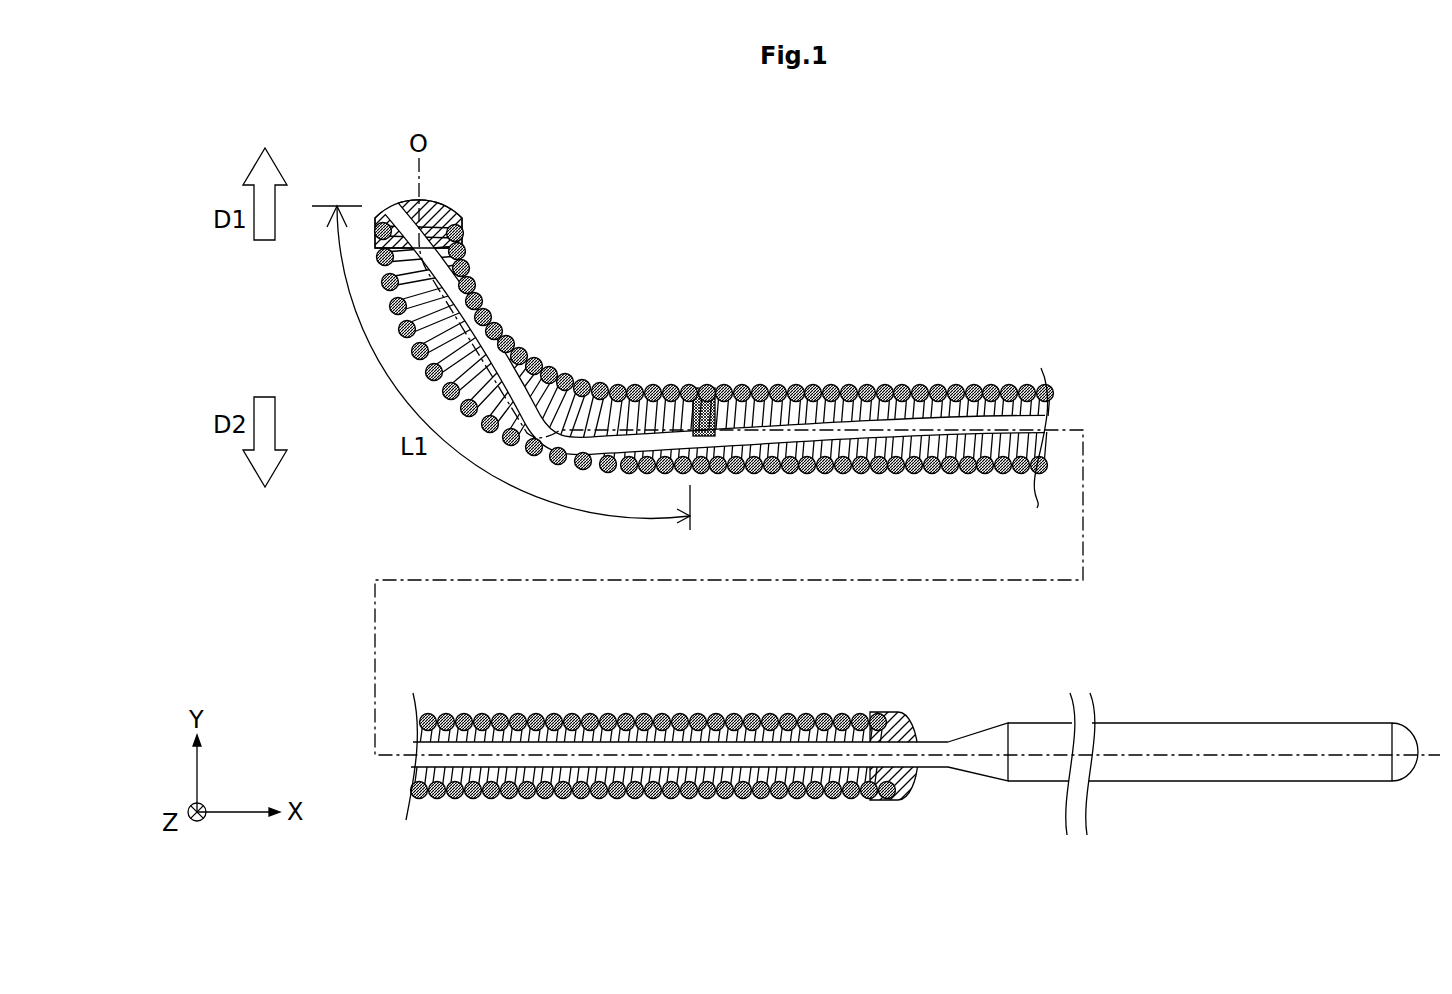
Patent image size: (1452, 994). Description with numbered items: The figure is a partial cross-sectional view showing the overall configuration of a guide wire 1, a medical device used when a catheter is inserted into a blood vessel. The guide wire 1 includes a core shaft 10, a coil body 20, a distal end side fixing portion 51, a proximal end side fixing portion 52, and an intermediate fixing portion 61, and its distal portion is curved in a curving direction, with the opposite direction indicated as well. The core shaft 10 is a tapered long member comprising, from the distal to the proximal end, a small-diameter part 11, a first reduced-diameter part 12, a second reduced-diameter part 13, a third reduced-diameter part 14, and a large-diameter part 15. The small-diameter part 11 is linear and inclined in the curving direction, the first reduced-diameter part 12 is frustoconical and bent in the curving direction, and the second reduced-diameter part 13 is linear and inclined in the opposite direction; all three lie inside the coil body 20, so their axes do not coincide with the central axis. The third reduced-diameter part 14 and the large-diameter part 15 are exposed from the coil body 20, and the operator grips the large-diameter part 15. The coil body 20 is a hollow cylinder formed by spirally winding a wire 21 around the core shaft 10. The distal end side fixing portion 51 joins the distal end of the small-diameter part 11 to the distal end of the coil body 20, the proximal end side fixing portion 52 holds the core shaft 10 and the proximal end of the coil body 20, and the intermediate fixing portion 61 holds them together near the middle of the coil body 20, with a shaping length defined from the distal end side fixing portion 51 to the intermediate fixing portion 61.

The guide wire 1 is at (144, 188).
The core shaft 10 is at (938, 408).
The small-diameter part 11 is at (528, 360).
The first reduced-diameter part 12 is at (605, 440).
The second reduced-diameter part 13 is at (1013, 420).
The third reduced-diameter part 14 is at (989, 732).
The large-diameter part 15 is at (1116, 734).
The coil body 20 is at (758, 378).
The wire 21 is at (868, 386).
The distal end side fixing portion 51 is at (449, 207).
The proximal end side fixing portion 52 is at (905, 712).
The intermediate fixing portion 61 is at (710, 388).